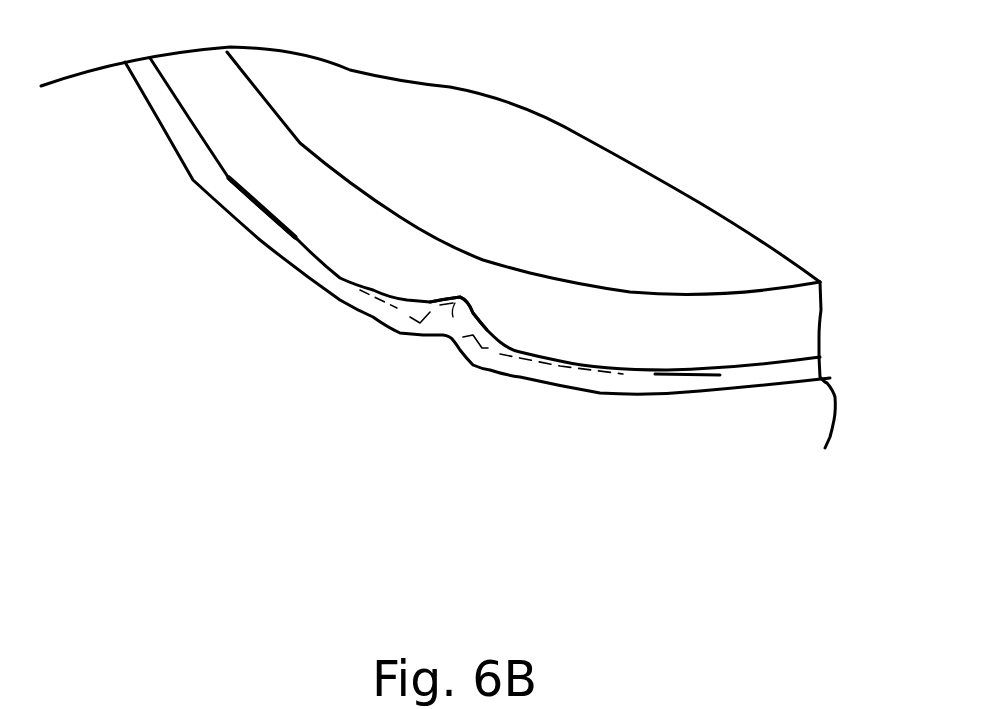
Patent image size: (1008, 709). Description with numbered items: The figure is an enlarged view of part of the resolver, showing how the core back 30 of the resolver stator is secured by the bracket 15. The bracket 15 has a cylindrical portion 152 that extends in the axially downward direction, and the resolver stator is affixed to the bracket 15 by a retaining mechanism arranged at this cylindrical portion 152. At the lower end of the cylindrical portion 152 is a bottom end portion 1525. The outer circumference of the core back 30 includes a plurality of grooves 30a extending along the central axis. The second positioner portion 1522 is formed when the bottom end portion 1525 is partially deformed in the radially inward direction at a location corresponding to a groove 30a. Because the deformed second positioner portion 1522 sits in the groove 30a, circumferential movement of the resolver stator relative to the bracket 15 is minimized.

The bracket 15 is at (744, 377).
The core back 30 is at (728, 323).
The groove 30a is at (453, 345).
The cylindrical portion 152 is at (180, 155).
The second positioner portion 1522 is at (465, 300).
The bottom end portion 1525 is at (245, 212).